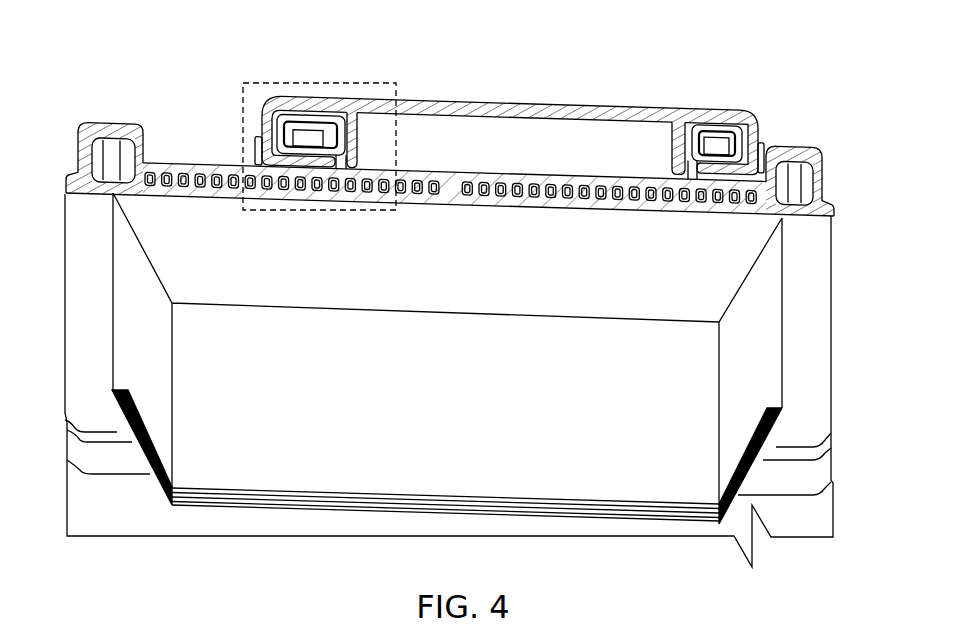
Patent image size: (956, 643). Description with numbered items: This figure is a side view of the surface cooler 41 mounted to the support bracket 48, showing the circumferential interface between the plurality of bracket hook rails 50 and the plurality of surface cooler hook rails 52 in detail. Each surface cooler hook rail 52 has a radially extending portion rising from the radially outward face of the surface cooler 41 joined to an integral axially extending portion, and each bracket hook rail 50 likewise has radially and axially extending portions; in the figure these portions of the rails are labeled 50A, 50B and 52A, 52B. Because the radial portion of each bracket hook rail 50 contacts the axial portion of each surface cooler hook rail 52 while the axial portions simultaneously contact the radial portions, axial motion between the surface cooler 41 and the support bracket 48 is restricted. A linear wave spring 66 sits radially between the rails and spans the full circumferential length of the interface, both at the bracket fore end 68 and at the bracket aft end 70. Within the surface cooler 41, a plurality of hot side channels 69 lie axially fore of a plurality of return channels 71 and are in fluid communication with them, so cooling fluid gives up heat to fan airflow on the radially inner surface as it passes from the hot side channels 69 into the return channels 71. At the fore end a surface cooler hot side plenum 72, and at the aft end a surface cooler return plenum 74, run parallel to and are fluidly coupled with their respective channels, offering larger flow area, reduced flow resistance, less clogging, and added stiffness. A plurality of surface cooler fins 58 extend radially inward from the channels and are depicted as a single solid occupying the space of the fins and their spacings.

The surface cooler 41 is at (502, 172).
The support bracket 48 is at (497, 107).
The bracket hook rails 50 is at (262, 110).
The hook opening 50A is at (270, 105).
The hook base 50B is at (307, 198).
The surface cooler hook rails 52 is at (371, 97).
The tab first portion 52A is at (344, 198).
The tab second portion 52B is at (318, 118).
The surface cooler fins 58 is at (326, 520).
The linear wave spring 66 is at (258, 138).
The bracket fore end 68 is at (297, 83).
The hot side channels 69 is at (232, 194).
The bracket aft end 70 is at (751, 102).
The return channels 71 is at (630, 196).
The surface cooler hot side plenum 72 is at (108, 158).
The surface cooler return plenum 74 is at (822, 192).